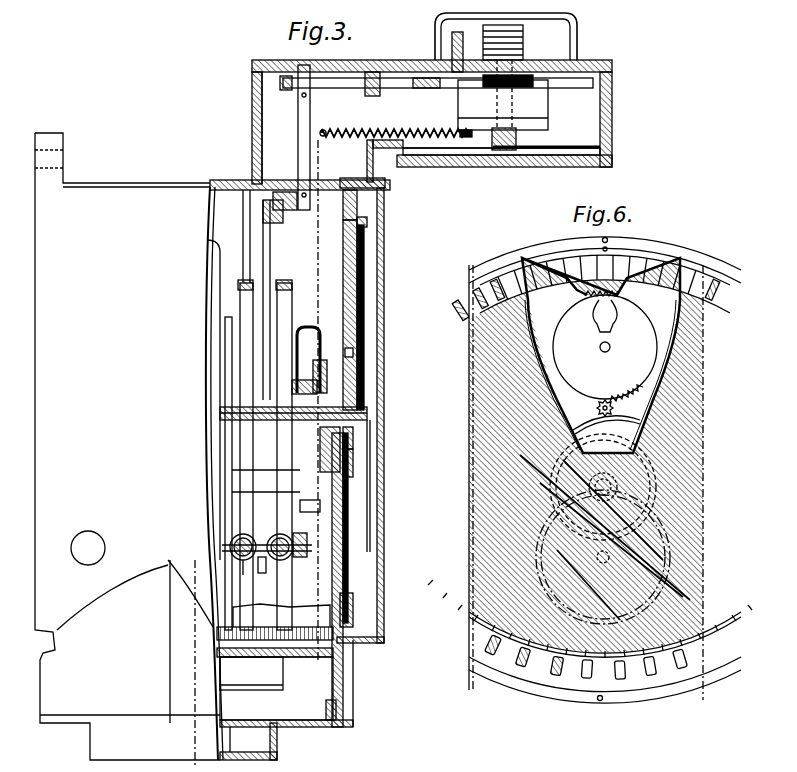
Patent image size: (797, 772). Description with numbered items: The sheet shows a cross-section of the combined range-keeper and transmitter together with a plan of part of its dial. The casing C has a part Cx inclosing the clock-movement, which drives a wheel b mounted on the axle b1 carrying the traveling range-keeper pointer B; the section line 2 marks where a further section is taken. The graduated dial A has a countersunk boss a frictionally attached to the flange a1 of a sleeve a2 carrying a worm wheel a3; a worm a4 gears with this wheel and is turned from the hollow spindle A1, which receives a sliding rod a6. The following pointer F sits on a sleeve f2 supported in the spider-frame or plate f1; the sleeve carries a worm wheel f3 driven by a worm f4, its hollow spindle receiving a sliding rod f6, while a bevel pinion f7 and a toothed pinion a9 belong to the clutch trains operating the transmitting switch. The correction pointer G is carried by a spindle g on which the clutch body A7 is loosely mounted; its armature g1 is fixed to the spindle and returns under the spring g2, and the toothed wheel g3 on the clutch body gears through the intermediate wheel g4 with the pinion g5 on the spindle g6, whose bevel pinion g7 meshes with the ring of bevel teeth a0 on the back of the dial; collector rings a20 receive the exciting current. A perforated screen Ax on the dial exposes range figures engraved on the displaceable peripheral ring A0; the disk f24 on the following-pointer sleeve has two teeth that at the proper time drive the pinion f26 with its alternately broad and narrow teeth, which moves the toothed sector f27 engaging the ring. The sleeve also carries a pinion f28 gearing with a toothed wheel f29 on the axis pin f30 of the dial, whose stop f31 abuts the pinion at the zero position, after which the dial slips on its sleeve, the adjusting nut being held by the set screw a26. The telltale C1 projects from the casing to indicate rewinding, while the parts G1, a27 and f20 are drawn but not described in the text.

In FIG. 3, the casing part Cx is at (127, 446).
In FIG. 3, the wheel b is at (216, 473).
In FIG. 6, the wheel b is at (614, 487).
In FIG. 3, the spindle g is at (585, 58).
In FIG. 3, the collector rings a20 is at (520, 50).
In FIG. 3, the clutch body portion A7 is at (503, 105).
In FIG. 3, the intermediate toothed wheel g4 is at (349, 80).
In FIG. 3, the pinion g5 is at (268, 78).
In FIG. 3, the spring g2 is at (377, 130).
In FIG. 3, the toothed wheel g3 is at (427, 88).
In FIG. 3, the spindle g6 is at (307, 123).
In FIG. 3, the rotary armature g1 is at (533, 128).
In FIG. 3, the bevel pinion g7 is at (285, 195).
In FIG. 3, the correction pointer G is at (553, 158).
In FIG. 3, the inner plate G1 is at (453, 155).
In FIG. 3, the section line 2 is at (257, 456).
In FIG. 3, the casing C is at (279, 396).
In FIG. 3, the ring of bevel teeth a0 is at (357, 187).
In FIG. 3, the peripheral ring A0 is at (353, 205).
In FIG. 6, the peripheral ring A0 is at (603, 292).
In FIG. 3, the intermediate toothed wheel or sector f27 is at (364, 243).
In FIG. 6, the intermediate toothed wheel or sector f27 is at (605, 346).
In FIG. 3, the graduated dial A is at (397, 578).
In FIG. 6, the graduated dial A is at (590, 479).
In FIG. 3, the range-keeper pointer B is at (364, 283).
In FIG. 3, the spider-frame or plate f1 is at (271, 249).
In FIG. 3, the worm wheel f3 is at (243, 507).
In FIG. 3, the sleeve f2 is at (300, 443).
In FIG. 6, the sleeve f2 is at (619, 487).
In FIG. 3, the axle b1 is at (240, 411).
In FIG. 3, the flange a1 is at (310, 380).
In FIG. 3, the following pointer F is at (353, 353).
In FIG. 3, the boss a is at (333, 367).
In FIG. 3, the toothed pinion f28 is at (367, 412).
In FIG. 6, the toothed pinion f28 is at (640, 495).
In FIG. 3, the disk f24 is at (353, 441).
In FIG. 3, the toothed wheel f29 is at (353, 466).
In FIG. 6, the toothed wheel f29 is at (641, 500).
In FIG. 3, the sleeve a2 is at (280, 472).
In FIG. 3, the worm wheel a3 is at (235, 492).
In FIG. 3, the worm a4 is at (307, 533).
In FIG. 3, the sliding rod a6 is at (297, 540).
In FIG. 3, the sliding rod f6 is at (232, 543).
In FIG. 3, the bevel pinion f7 is at (243, 562).
In FIG. 3, the spindle A1 is at (282, 560).
In FIG. 3, the worm f4 is at (238, 557).
In FIG. 3, the toothed pinion a9 is at (313, 641).
In FIG. 3, the telltale C1 is at (247, 641).
In FIG. 3, the bottom wall a27 is at (248, 749).
In FIG. 3, the set screw a26 is at (273, 747).
In FIG. 6, the perforated screen or ring Ax is at (493, 262).
In FIG. 6, the pinion f20 is at (597, 409).
In FIG. 6, the toothed pinion f26 is at (618, 426).
In FIG. 6, the axis pin f30 is at (600, 536).
In FIG. 6, the peripheral projection or stop f31 is at (575, 478).